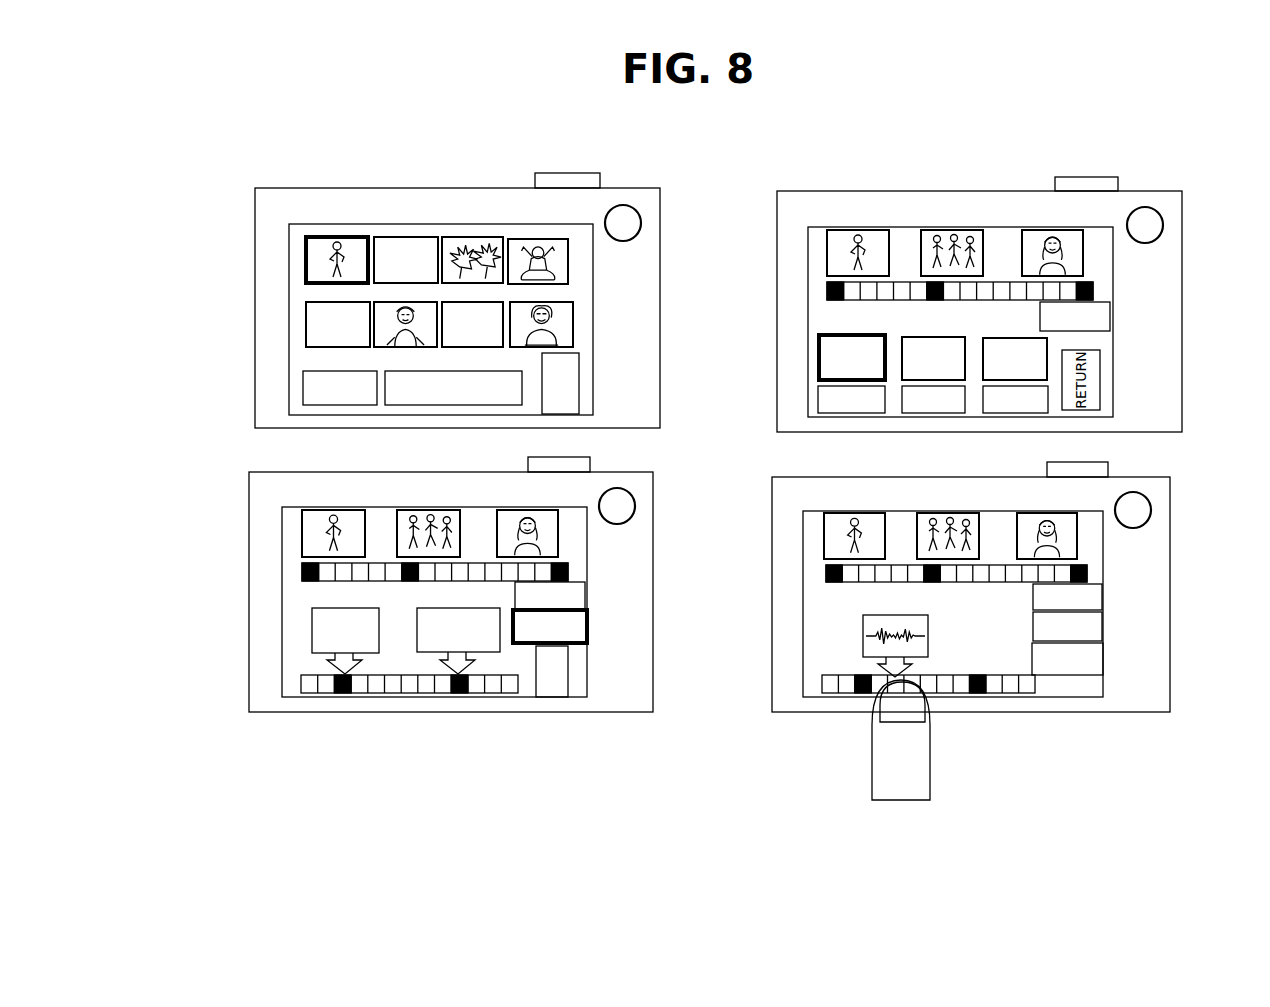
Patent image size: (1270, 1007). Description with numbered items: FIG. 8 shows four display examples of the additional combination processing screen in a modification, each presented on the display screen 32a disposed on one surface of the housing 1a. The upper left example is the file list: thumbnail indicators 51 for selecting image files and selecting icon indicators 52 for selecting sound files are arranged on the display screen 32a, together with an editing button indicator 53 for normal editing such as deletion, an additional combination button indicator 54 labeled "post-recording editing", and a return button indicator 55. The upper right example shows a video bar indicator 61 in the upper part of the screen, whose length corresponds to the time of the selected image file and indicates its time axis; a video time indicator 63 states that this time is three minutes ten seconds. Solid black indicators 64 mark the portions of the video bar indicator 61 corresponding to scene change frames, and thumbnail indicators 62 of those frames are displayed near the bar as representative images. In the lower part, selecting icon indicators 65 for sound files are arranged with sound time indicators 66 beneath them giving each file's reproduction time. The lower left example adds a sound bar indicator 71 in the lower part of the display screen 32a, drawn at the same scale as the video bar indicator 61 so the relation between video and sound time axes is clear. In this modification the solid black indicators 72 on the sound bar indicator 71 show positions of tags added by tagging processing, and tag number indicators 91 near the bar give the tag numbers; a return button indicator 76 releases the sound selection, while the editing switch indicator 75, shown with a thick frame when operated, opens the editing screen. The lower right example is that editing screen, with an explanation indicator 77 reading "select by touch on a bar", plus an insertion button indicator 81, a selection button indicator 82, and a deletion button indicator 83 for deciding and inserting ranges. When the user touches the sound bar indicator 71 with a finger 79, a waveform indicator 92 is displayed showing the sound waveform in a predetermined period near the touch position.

The housing 1a is at (447, 188).
The display screen 32a is at (303, 225).
The thumbnail indicator 51 is at (343, 237).
The selecting icon indicator 52 is at (405, 237).
The editing button indicator 53 is at (337, 405).
The additional combination button indicator 54 is at (440, 405).
The return button indicator 55 is at (579, 385).
The video bar indicator 61 is at (903, 282).
The thumbnail indicator 62 is at (948, 230).
The video time indicator 63 is at (1108, 315).
The indicator 64 is at (827, 292).
The selecting icon indicator 65 is at (819, 357).
The sound time indicator 66 is at (925, 413).
The sound bar indicator 71 is at (402, 693).
The indicator 72 is at (340, 693).
The editing switch indicator 75 is at (585, 614).
The return button indicator 76 is at (542, 697).
The explanation indicator 77 is at (818, 597).
The finger 79 is at (915, 717).
The insertion button indicator 81 is at (1100, 595).
The selection button indicator 82 is at (1100, 625).
The deletion button indicator 83 is at (1100, 662).
The tag number indicator 91 is at (312, 640).
The waveform indicator 92 is at (863, 638).